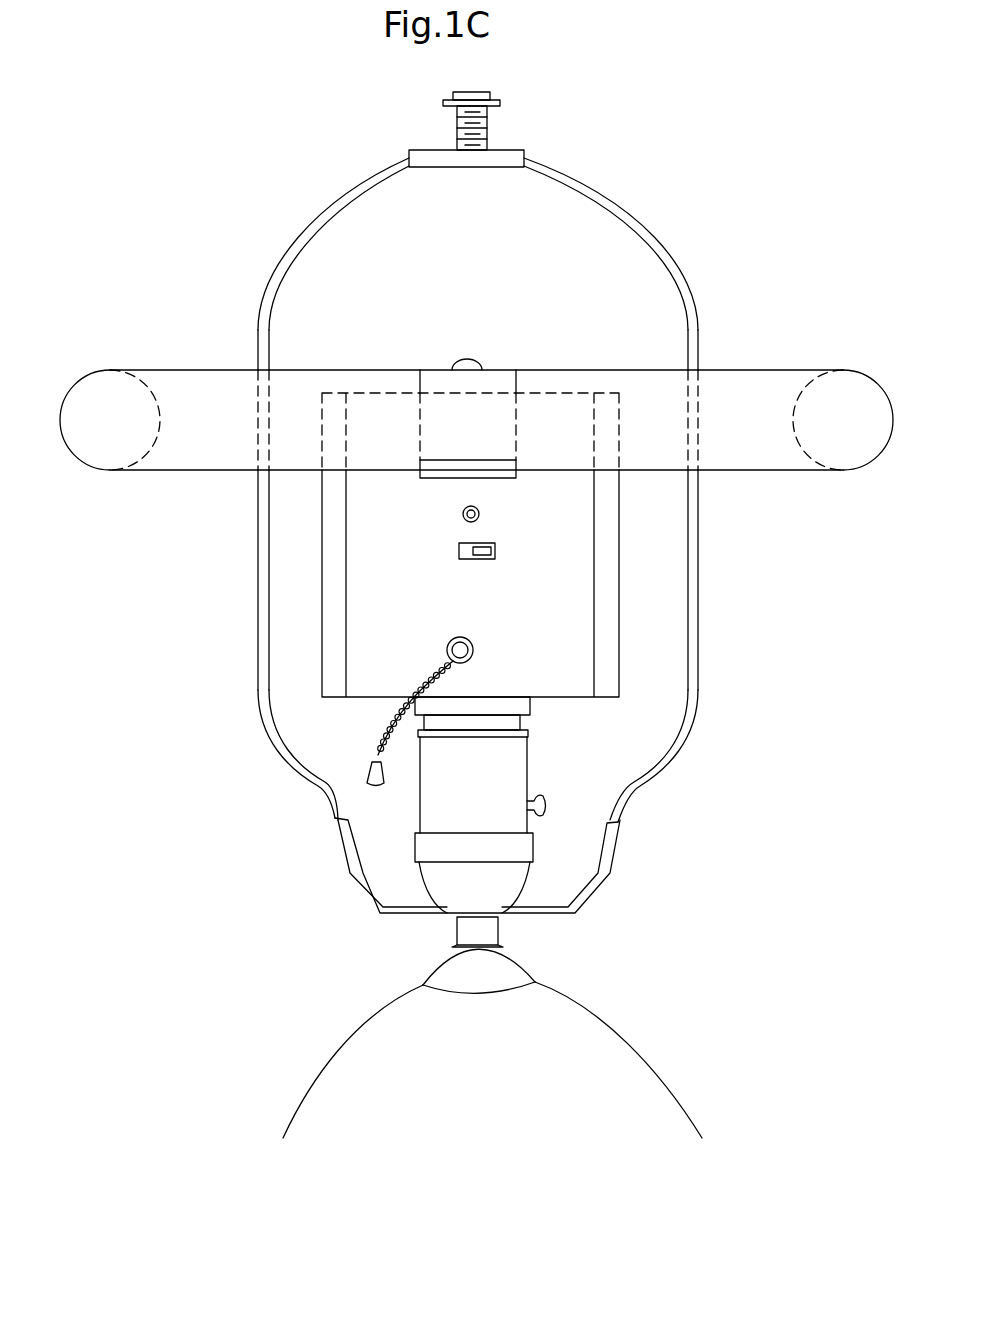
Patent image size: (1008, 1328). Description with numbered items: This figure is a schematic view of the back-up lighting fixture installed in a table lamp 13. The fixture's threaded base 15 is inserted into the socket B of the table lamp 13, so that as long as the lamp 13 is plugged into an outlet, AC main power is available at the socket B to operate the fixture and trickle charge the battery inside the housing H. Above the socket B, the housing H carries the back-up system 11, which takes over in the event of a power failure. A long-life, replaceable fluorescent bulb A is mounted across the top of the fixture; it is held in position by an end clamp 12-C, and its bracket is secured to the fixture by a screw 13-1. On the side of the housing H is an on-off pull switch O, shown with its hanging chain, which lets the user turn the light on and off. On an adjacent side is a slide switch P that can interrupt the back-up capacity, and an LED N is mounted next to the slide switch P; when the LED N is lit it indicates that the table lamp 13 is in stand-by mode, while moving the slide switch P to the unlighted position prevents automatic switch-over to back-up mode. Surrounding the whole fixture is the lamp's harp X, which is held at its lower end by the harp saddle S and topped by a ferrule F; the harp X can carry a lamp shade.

The ferrule F is at (498, 98).
The harp X is at (700, 637).
The fluorescent bulb A is at (190, 370).
The screw 13-1 is at (467, 369).
The back-up system 11 is at (380, 638).
The housing H is at (642, 655).
The end clamp 12-C is at (481, 471).
The LED N is at (462, 514).
The slide switch P is at (459, 557).
The pull switch O is at (377, 748).
The threaded base 15 is at (522, 723).
The socket B is at (513, 776).
The harp saddle S is at (622, 842).
The table lamp 13 is at (306, 1031).